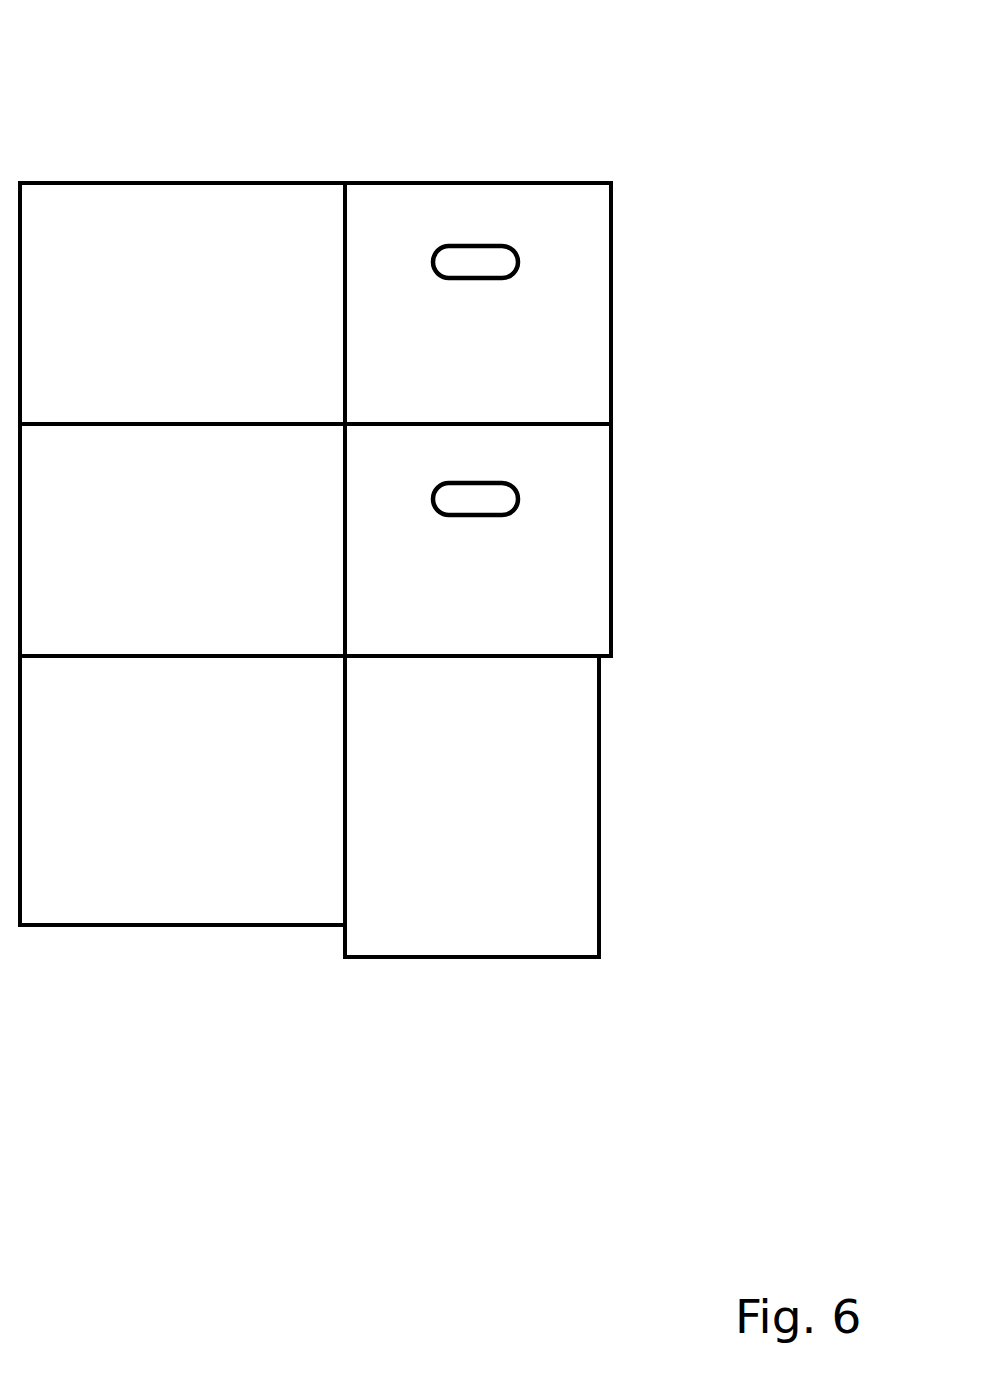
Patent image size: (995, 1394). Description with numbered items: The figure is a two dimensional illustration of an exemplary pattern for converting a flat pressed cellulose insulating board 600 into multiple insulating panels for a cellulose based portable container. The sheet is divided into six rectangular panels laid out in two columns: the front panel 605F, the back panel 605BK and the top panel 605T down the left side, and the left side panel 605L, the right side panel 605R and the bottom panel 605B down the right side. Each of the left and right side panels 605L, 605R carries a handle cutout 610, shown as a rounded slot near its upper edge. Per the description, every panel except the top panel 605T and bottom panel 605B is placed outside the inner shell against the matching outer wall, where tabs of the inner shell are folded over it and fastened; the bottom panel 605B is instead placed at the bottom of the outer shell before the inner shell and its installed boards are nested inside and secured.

The pressed cellulose insulating board 600 is at (70, 22).
The front insulating board panel 605F is at (228, 357).
The left side insulating board panel 605L is at (511, 357).
The back insulating board panel 605BK is at (238, 606).
The right side insulating board panel 605R is at (514, 606).
The top insulating board panel 605T is at (228, 811).
The bottom insulating board panel 605B is at (514, 811).
The handle cutout 610 is at (502, 259).